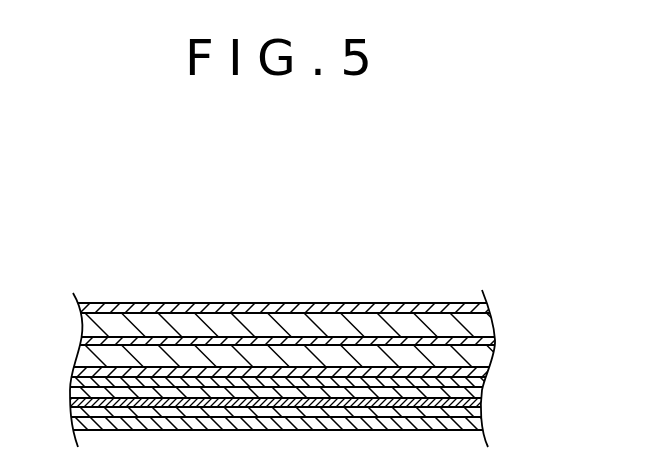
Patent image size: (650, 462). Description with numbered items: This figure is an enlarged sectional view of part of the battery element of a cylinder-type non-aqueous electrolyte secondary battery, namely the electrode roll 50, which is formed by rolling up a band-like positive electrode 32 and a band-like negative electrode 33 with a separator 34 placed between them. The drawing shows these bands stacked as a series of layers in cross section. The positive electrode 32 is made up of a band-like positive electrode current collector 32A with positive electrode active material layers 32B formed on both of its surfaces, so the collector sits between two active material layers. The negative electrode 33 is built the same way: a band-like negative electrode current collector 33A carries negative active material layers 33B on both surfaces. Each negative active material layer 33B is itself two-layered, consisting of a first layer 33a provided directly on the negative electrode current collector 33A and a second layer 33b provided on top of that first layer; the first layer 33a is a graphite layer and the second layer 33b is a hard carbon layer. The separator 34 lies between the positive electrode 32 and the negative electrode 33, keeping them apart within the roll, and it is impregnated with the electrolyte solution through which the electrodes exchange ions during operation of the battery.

The electrode roll 50 is at (445, 162).
The positive electrode 32 is at (198, 235).
The positive electrode current collector 32A is at (119, 342).
The positive electrode active material layer 32B is at (150, 358).
The negative electrode 33 is at (362, 183).
The negative electrode current collector 33A is at (262, 392).
The negative active material layer 33B is at (388, 235).
The first layer 33a is at (290, 410).
The second layer 33b is at (355, 425).
The separator 34 is at (423, 363).